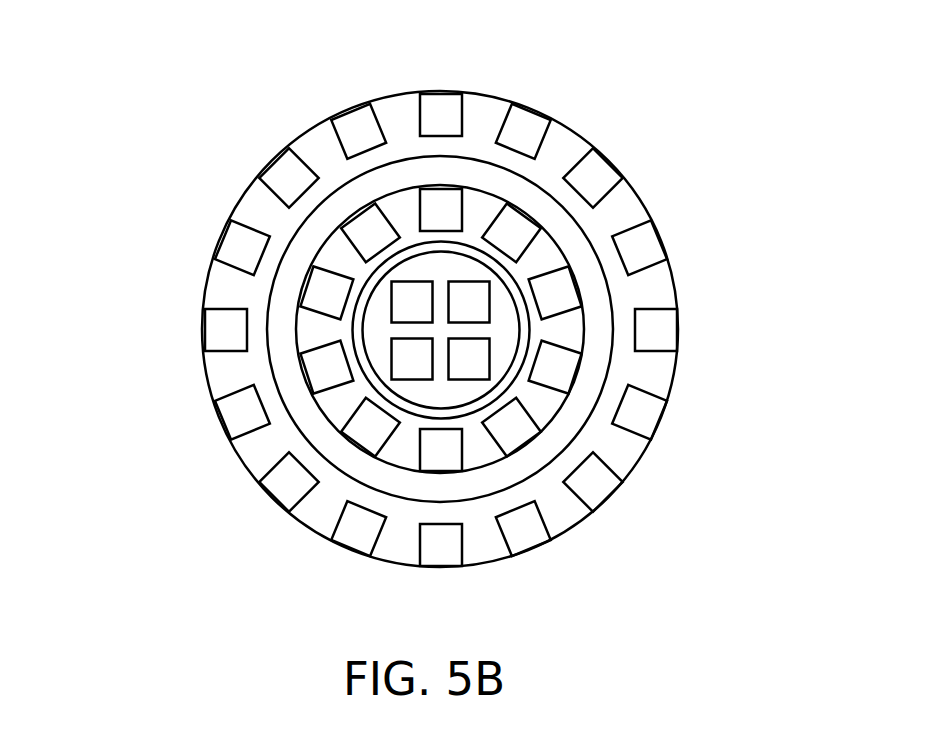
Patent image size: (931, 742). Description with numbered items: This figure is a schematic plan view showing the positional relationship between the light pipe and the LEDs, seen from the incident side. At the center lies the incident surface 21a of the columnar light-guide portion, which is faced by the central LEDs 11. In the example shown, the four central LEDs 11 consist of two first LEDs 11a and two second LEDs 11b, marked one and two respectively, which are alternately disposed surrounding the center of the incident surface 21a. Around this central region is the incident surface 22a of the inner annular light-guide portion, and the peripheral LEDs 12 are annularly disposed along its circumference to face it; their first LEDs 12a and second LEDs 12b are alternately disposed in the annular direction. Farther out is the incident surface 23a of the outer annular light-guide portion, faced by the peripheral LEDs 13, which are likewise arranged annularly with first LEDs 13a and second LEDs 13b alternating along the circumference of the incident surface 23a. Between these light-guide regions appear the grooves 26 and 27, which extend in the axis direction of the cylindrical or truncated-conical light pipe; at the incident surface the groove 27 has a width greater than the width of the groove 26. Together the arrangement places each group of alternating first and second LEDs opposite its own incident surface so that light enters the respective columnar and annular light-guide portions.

The central LEDs 11 is at (407, 455).
The first LEDs 11a is at (422, 365).
The second LEDs 11b is at (470, 372).
The peripheral LEDs 12 is at (399, 302).
The first LEDs 12a is at (567, 357).
The second LEDs 12b is at (328, 275).
The peripheral LEDs 13 is at (386, 330).
The first LEDs 13a is at (218, 333).
The second LEDs 13b is at (235, 243).
The incident surface 21a is at (463, 273).
The incident surface 22a is at (400, 210).
The incident surface 23a is at (548, 152).
The groove 26 is at (510, 370).
The groove 27 is at (312, 418).